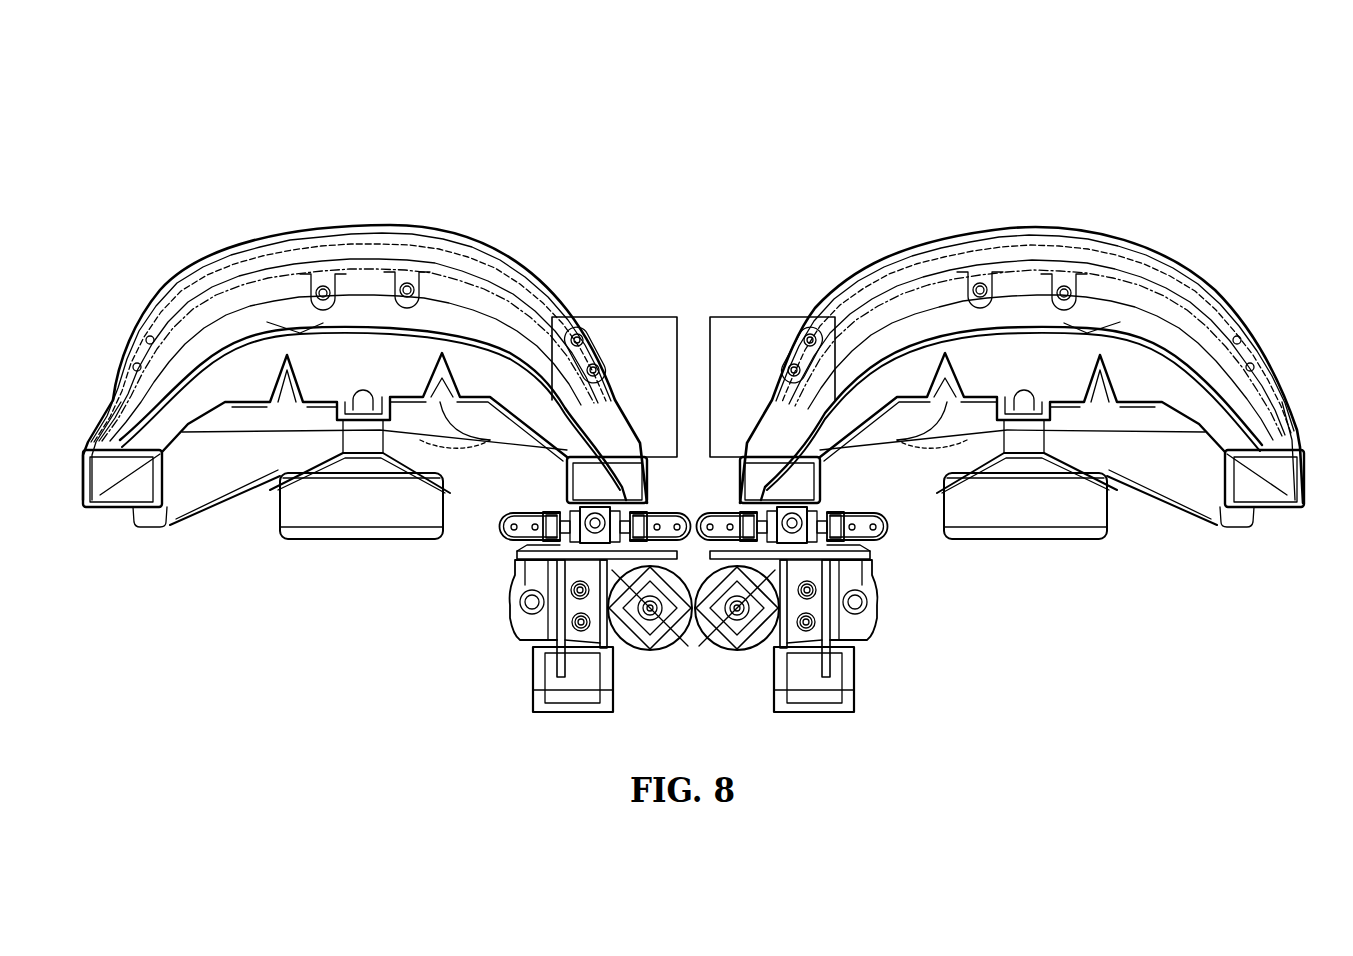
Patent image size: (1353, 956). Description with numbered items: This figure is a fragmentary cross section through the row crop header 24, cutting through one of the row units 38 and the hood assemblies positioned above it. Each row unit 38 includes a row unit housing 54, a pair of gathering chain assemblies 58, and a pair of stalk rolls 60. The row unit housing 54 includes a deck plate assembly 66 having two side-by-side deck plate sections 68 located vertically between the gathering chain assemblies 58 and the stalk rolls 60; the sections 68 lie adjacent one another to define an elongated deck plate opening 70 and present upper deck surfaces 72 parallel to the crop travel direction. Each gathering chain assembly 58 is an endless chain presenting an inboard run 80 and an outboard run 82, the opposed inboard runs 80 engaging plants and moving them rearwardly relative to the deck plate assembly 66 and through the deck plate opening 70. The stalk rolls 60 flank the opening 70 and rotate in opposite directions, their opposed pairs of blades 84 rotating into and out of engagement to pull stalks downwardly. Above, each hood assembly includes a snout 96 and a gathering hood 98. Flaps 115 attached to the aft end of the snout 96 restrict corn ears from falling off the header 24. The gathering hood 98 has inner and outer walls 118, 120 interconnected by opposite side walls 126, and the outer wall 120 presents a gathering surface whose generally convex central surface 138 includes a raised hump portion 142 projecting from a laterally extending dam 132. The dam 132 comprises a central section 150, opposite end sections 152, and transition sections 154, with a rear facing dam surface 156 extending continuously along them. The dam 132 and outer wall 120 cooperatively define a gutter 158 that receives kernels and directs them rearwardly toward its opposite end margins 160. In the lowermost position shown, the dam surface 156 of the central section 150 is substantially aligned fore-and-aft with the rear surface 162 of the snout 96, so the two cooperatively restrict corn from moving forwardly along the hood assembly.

The header 24 is at (1122, 110).
The row unit 38 is at (527, 545).
The row unit housing 54 is at (868, 637).
The gathering chain assembly 58 is at (507, 532).
The stalk roll 60 is at (770, 650).
The deck plate assembly 66 is at (780, 518).
The deck plate section 68 is at (703, 527).
The deck plate opening 70 is at (522, 600).
The upper deck surface 72 is at (600, 498).
The inboard run 80 is at (750, 528).
The outboard run 82 is at (503, 520).
The blade 84 is at (720, 640).
The snout 96 is at (417, 227).
The gathering hood 98 is at (252, 346).
The flap 115 is at (657, 327).
The inner wall 118 is at (204, 437).
The outer wall 120 is at (168, 394).
The side wall 126 is at (82, 475).
The dam 132 is at (436, 246).
The central surface 138 is at (497, 340).
The hump portion 142 is at (352, 270).
The central section 150 is at (376, 268).
The end section 152 is at (205, 374).
The transition section 154 is at (172, 362).
The dam surface 156 is at (290, 292).
The gutter 158 is at (510, 258).
The end margin 160 is at (80, 425).
The rear surface 162 is at (450, 240).